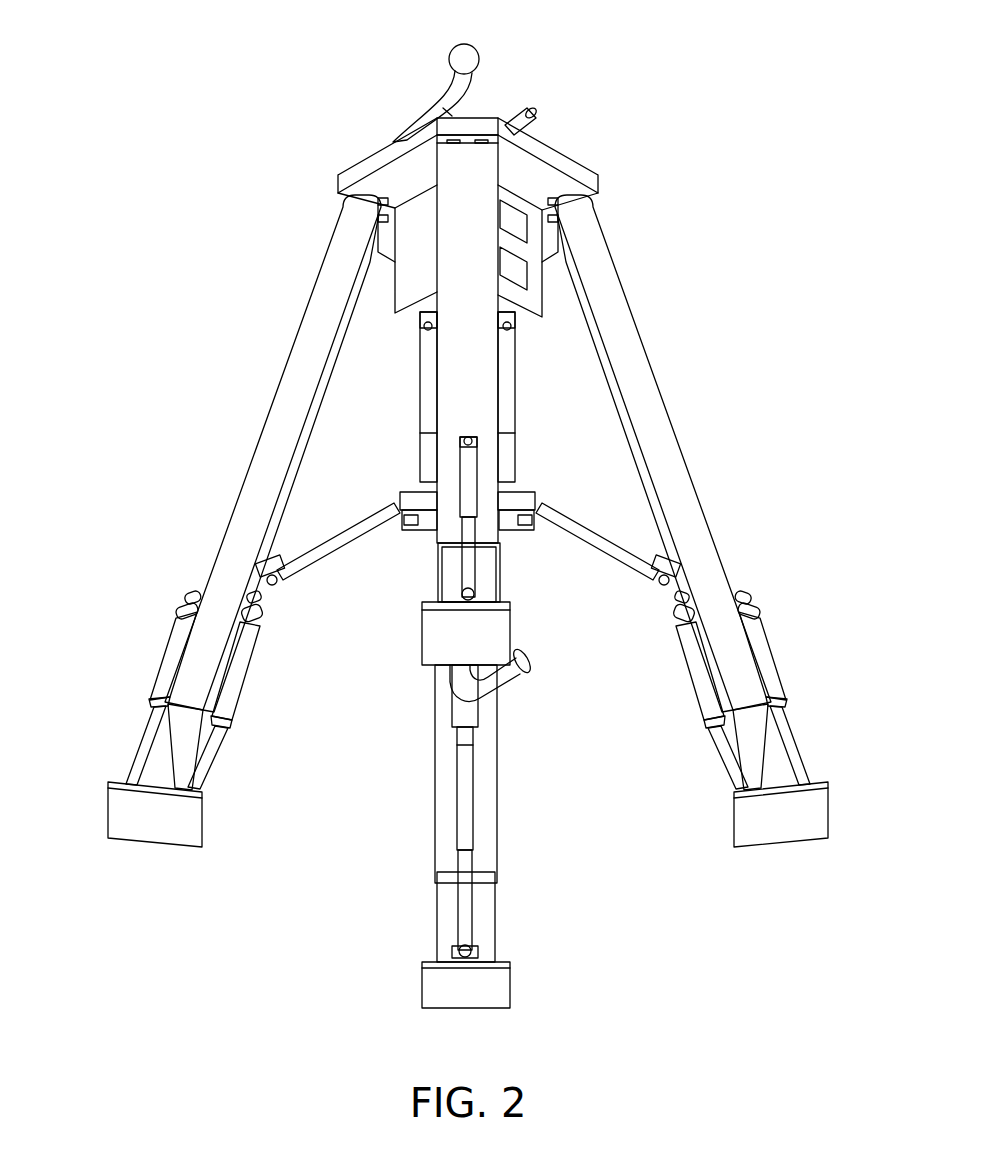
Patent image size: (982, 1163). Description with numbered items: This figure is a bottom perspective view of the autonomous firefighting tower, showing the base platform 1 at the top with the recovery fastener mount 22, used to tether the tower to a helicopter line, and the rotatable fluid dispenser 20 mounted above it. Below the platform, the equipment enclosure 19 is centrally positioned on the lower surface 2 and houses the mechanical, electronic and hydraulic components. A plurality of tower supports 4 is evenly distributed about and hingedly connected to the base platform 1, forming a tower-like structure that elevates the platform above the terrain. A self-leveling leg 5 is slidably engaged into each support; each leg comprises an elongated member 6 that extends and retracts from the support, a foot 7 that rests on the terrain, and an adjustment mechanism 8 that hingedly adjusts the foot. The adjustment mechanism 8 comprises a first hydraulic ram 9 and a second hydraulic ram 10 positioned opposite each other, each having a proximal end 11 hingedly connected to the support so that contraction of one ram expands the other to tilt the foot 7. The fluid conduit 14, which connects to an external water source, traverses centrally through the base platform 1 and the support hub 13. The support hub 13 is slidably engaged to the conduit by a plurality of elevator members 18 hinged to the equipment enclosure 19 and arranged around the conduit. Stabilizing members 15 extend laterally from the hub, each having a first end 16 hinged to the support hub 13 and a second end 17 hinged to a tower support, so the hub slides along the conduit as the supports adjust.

The base platform 1 is at (375, 128).
The lower surface 2 is at (397, 194).
The tower supports 4 is at (322, 288).
The self-leveling legs 5 is at (94, 634).
The elongated member 6 is at (186, 790).
The foot 7 is at (120, 818).
The adjustment mechanism 8 is at (256, 723).
The first hydraulic ram 9 is at (250, 650).
The second hydraulic ram 10 is at (158, 686).
The proximal end 11 is at (182, 605).
The support hub 13 is at (528, 498).
The fluid conduit 14 is at (527, 660).
The stabilizing members 15 is at (353, 533).
The first end 16 is at (396, 520).
The second end 17 is at (285, 567).
The elevator members 18 is at (418, 395).
The equipment enclosure 19 is at (405, 318).
The fluid dispenser 20 is at (532, 108).
The recovery fastener mount 22 is at (472, 52).